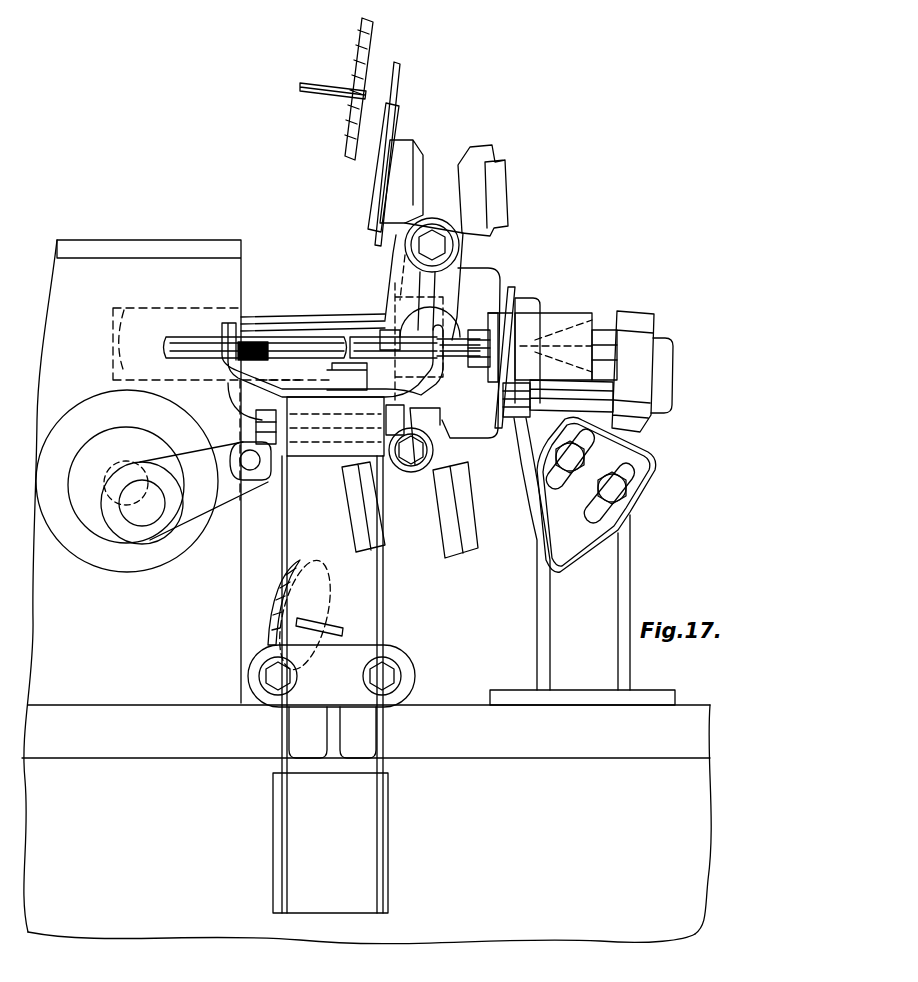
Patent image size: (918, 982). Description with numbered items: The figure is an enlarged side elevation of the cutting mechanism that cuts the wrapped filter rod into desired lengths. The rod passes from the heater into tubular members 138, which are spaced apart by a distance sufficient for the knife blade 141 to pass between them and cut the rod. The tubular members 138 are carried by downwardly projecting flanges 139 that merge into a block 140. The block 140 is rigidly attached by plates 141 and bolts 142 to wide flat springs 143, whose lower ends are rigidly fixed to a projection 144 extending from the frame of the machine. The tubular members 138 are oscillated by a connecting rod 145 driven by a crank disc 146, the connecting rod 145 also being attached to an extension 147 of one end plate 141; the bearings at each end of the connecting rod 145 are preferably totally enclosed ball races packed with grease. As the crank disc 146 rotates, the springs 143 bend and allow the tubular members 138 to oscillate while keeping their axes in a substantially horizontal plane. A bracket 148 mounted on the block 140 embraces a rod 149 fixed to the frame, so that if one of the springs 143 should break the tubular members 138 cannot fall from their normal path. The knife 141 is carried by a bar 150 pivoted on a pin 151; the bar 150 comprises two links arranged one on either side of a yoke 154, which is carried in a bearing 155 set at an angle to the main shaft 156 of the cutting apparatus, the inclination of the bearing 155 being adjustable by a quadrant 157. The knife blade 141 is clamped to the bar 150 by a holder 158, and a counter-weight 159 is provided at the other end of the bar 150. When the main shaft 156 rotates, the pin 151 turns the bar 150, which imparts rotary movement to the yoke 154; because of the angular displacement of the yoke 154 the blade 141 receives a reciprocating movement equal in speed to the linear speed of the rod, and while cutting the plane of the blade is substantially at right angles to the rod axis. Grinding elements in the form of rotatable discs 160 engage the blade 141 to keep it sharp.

The tubular members 138 is at (367, 340).
The downwardly projecting flanges 139 is at (452, 410).
The block 140 is at (320, 452).
The knife blade 141 is at (398, 76).
The bolts 142 is at (432, 462).
The wide flat springs 143 is at (282, 568).
The projection 144 is at (348, 816).
The connecting rod 145 is at (188, 495).
The crank disc 146 is at (127, 403).
The extension 147 is at (240, 442).
The bracket 148 is at (262, 330).
The rod 149 is at (397, 343).
The bar 150 is at (468, 238).
The pin 151 is at (392, 285).
The yoke 154 is at (488, 284).
The bearing 155 is at (598, 340).
The main shaft 156 is at (200, 308).
The quadrant 157 is at (640, 463).
The holder 158 is at (374, 190).
The counter-weight 159 is at (440, 548).
The rotatable discs 160 is at (365, 52).